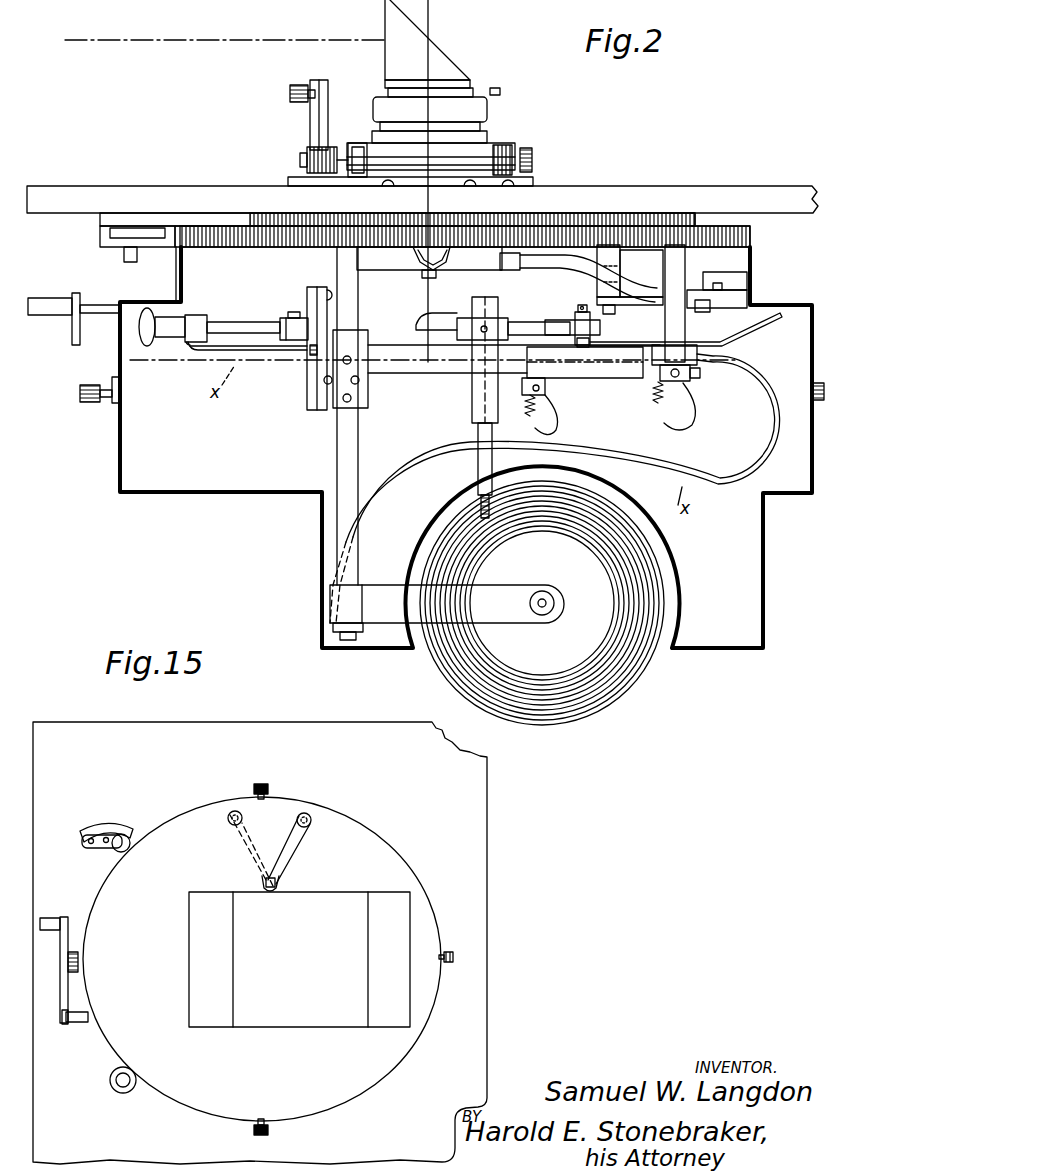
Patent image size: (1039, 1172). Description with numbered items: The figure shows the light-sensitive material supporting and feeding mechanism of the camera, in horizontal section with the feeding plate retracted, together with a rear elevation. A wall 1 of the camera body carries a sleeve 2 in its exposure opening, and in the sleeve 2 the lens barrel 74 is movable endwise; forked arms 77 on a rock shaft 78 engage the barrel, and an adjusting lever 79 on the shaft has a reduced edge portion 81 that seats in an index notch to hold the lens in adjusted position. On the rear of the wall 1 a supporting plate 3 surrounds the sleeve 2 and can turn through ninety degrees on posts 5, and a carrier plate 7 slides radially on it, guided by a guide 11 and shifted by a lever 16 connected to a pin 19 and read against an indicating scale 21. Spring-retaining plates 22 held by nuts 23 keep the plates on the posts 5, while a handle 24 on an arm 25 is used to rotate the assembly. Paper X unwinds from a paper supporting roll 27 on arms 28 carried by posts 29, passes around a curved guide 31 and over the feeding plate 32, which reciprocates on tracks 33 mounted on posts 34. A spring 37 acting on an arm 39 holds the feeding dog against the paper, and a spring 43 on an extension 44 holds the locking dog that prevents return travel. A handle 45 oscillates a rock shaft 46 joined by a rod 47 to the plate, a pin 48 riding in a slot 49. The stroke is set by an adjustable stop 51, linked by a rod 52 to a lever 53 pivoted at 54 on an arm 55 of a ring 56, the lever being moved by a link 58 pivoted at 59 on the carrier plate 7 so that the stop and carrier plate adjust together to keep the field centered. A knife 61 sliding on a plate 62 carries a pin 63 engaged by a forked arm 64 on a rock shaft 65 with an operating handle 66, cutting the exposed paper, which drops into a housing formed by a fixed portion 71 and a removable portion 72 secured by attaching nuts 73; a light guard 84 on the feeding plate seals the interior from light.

In FIG. 2, the wall of camera body 1 is at (422, 186).
In FIG. 15, the wall of camera body 1 is at (270, 943).
In FIG. 2, the sleeve 2 is at (410, 194).
In FIG. 2, the supporting plate 3 is at (397, 210).
In FIG. 2, the posts 5 is at (436, 281).
In FIG. 2, the carrier plate 7 is at (475, 234).
In FIG. 2, the guide 11 is at (115, 235).
In FIG. 15, the lever 16 is at (104, 857).
In FIG. 2, the pin 19 is at (111, 258).
In FIG. 15, the indicating scale 21 is at (89, 844).
In FIG. 2, the spring-retaining plates 22 is at (447, 258).
In FIG. 2, the nuts 23 is at (415, 262).
In FIG. 15, the handle 24 is at (136, 1098).
In FIG. 15, the arm 25 is at (114, 1095).
In FIG. 2, the paper supporting roll 27 is at (561, 603).
In FIG. 2, the arms 28 is at (447, 615).
In FIG. 2, the posts 29 is at (334, 416).
In FIG. 2, the curved guide 31 is at (555, 488).
In FIG. 2, the feeding plate 32 is at (585, 374).
In FIG. 2, the tracks 33 is at (514, 371).
In FIG. 2, the posts 34 is at (693, 327).
In FIG. 2, the spring 37 is at (525, 411).
In FIG. 2, the arm 39 is at (556, 416).
In FIG. 2, the spring 43 is at (641, 402).
In FIG. 2, the extension 44 is at (679, 415).
In FIG. 15, the handle 45 is at (269, 846).
In FIG. 2, the rock shaft 46 is at (463, 407).
In FIG. 2, the rod 47 is at (477, 316).
In FIG. 2, the pin 48 is at (554, 314).
In FIG. 2, the slot 49 is at (602, 325).
In FIG. 2, the adjustable stop 51 is at (611, 337).
In FIG. 2, the rod 52 is at (738, 290).
In FIG. 2, the lever 53 is at (751, 276).
In FIG. 2, the pivot 54 is at (708, 315).
In FIG. 2, the arm 55 is at (578, 277).
In FIG. 2, the ring 56 is at (429, 274).
In FIG. 2, the link 58 is at (630, 281).
In FIG. 2, the pivot 59 is at (593, 272).
In FIG. 2, the knife 61 is at (294, 366).
In FIG. 2, the plate 62 is at (313, 335).
In FIG. 2, the pin 63 is at (281, 318).
In FIG. 2, the forked arm 64 is at (289, 301).
In FIG. 2, the rock shaft 65 is at (223, 320).
In FIG. 15, the rock shaft 65 is at (75, 1033).
In FIG. 2, the operating handle 66 is at (74, 319).
In FIG. 15, the operating handle 66 is at (59, 957).
In FIG. 2, the fixed portion 71 is at (159, 273).
In FIG. 2, the removable portion 72 is at (466, 447).
In FIG. 15, the removable portion 72 is at (272, 959).
In FIG. 2, the attaching nuts 73 is at (451, 403).
In FIG. 15, the attaching nuts 73 is at (363, 958).
In FIG. 2, the lens barrel 74 is at (440, 138).
In FIG. 2, the forked arms 77 is at (449, 127).
In FIG. 2, the rock shaft 78 is at (534, 155).
In FIG. 2, the adjusting lever 79 is at (300, 115).
In FIG. 2, the reduced edge portion 81 is at (333, 118).
In FIG. 2, the light guard 84 is at (686, 337).